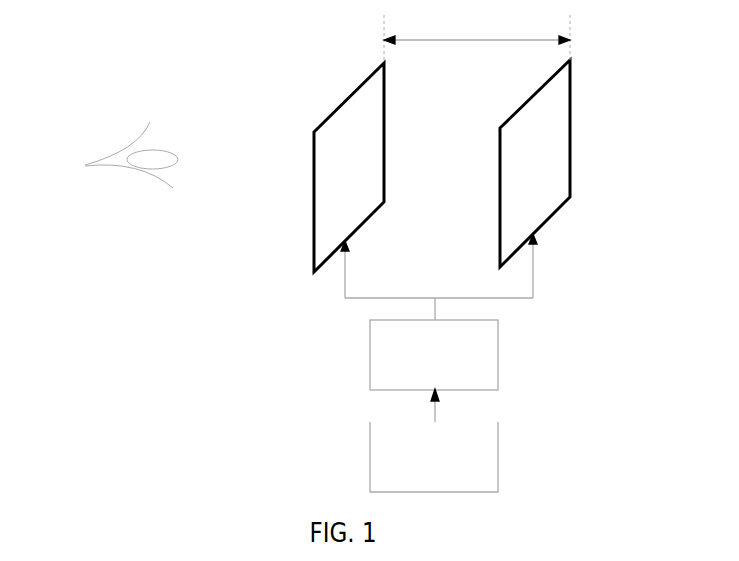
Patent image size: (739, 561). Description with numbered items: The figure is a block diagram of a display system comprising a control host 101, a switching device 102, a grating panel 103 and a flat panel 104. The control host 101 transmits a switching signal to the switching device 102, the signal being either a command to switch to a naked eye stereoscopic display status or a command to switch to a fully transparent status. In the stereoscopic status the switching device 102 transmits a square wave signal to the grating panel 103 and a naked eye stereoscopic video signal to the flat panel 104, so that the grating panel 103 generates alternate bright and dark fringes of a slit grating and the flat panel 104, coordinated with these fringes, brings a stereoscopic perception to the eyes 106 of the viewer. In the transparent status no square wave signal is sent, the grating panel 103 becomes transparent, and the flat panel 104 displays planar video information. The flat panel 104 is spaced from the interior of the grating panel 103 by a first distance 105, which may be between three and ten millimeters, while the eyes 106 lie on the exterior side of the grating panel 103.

The control host 101 is at (499, 455).
The switching device 102 is at (499, 350).
The grating panel 103 is at (385, 128).
The flat panel 104 is at (572, 128).
The first distance 105 is at (452, 40).
The eyes 106 is at (129, 132).